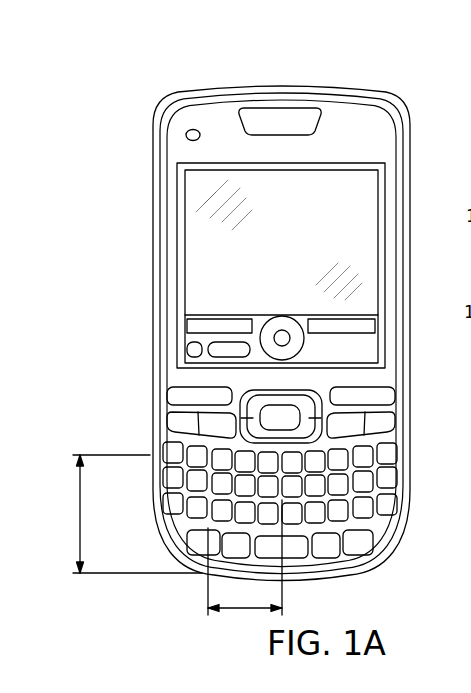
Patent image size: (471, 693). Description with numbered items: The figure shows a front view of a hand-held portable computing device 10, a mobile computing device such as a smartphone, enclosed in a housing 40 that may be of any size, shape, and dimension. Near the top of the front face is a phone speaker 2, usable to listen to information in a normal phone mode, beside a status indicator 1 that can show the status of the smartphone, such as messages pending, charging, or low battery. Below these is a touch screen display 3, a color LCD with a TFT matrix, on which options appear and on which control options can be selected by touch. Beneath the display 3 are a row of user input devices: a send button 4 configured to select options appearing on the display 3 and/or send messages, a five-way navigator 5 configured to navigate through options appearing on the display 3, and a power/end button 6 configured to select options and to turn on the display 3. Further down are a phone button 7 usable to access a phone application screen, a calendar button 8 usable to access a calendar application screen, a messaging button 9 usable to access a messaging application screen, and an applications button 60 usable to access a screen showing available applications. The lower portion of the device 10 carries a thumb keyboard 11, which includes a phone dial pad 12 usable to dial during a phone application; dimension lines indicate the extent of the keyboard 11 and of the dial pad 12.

The status indicator 1 is at (183, 128).
The phone speaker 2 is at (280, 104).
The touch screen display 3 is at (266, 244).
The send button 4 is at (196, 382).
The 5-way navigator 5 is at (307, 402).
The power/end button 6 is at (368, 382).
The phone button 7 is at (151, 427).
The calendar button 8 is at (222, 444).
The messaging button 9 is at (343, 447).
The hand-held portable computing device 10 is at (112, 311).
The thumb keyboard 11 is at (77, 514).
The phone dial pad 12 is at (244, 615).
The applications button 60 is at (397, 429).
The housing 40 is at (470, 578).